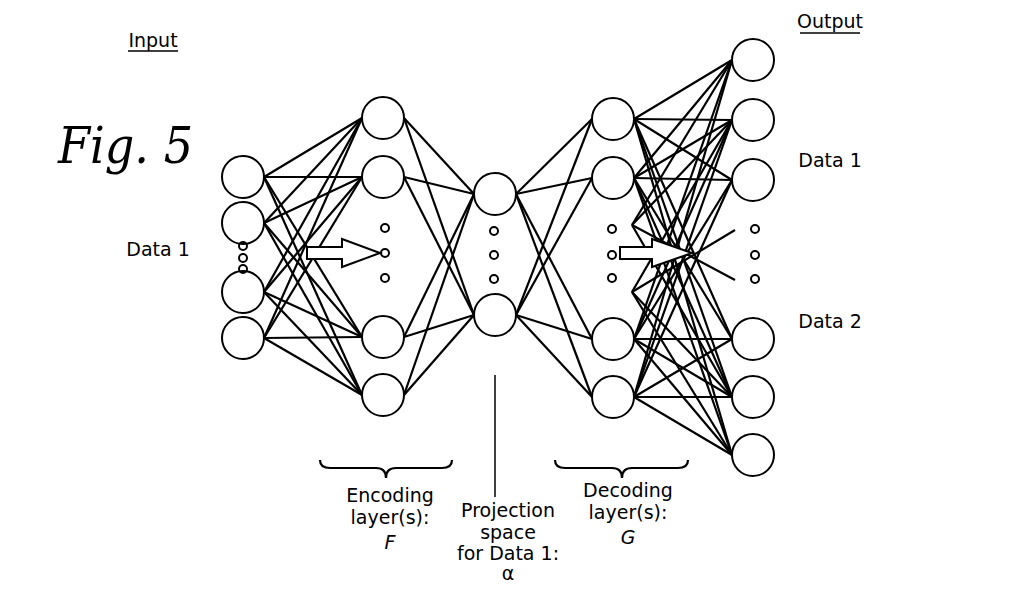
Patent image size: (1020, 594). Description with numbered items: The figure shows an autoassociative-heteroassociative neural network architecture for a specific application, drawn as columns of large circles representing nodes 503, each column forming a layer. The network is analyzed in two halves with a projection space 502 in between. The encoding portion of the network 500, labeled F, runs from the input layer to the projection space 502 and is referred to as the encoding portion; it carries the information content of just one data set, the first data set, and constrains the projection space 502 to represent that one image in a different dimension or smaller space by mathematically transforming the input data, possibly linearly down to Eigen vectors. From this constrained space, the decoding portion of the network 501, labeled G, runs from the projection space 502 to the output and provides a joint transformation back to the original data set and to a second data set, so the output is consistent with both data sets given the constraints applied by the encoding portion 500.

The encoding portion of the network 500 is at (398, 90).
The decoding portion of the network 501 is at (674, 236).
The projection space 502 is at (490, 117).
The nodes 503 is at (488, 335).